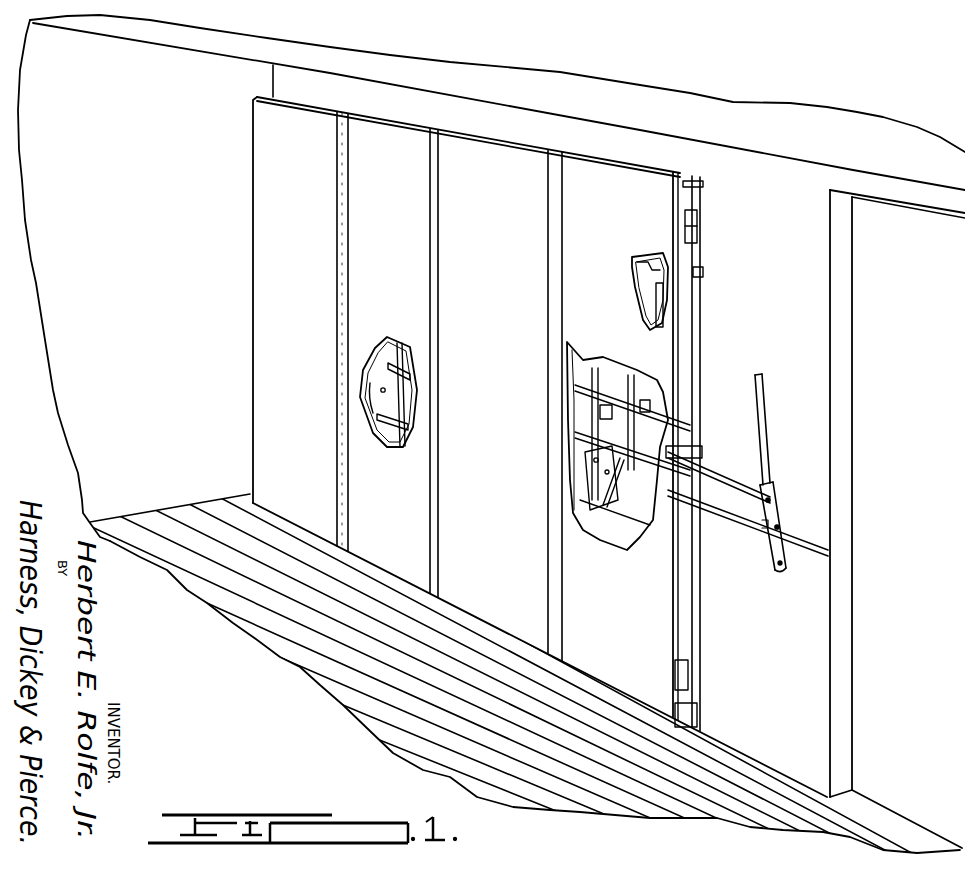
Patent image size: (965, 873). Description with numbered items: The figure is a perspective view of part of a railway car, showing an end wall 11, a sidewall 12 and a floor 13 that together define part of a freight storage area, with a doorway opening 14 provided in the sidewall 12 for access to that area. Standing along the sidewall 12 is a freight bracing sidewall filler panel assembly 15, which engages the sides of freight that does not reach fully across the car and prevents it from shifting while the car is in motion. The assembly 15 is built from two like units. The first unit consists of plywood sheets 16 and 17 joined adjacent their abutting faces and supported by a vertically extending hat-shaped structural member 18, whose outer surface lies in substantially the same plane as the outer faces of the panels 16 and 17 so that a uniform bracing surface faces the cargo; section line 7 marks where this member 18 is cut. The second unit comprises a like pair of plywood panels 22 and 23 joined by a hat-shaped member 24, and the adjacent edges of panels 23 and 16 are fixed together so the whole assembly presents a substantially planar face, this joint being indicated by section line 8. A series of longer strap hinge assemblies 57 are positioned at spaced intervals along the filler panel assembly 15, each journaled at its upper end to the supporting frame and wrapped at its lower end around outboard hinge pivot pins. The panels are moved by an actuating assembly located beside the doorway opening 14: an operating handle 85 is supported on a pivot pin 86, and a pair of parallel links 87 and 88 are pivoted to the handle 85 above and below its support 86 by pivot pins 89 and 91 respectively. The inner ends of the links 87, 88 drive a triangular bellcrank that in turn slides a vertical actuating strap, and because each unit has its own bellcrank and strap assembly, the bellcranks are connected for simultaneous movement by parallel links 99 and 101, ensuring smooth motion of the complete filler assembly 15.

The end wall 11 is at (116, 210).
The sidewall 12 is at (772, 271).
The floor 13 is at (478, 726).
The doorway opening 14 is at (843, 337).
The sidewall filler panel assembly 15 is at (712, 210).
The plywood sheet 16 is at (512, 262).
The plywood sheet 17 is at (618, 284).
The hat-shaped structural member 18 is at (560, 218).
The plywood panel 22 is at (303, 233).
The plywood panel 23 is at (398, 254).
The hat-shaped member 24 is at (347, 200).
The strap hinge assembly 57 is at (672, 313).
The operating handle 85 is at (763, 390).
The pivot pin 86 is at (777, 527).
The parallel link 87 is at (710, 473).
The parallel link 88 is at (717, 543).
The pivot pin 89 is at (773, 500).
The pivot pin 91 is at (782, 570).
The parallel link 99 is at (410, 373).
The parallel link 101 is at (410, 423).
The section line 7- 7 is at (533, 605).
The section line 8- 8 is at (414, 575).